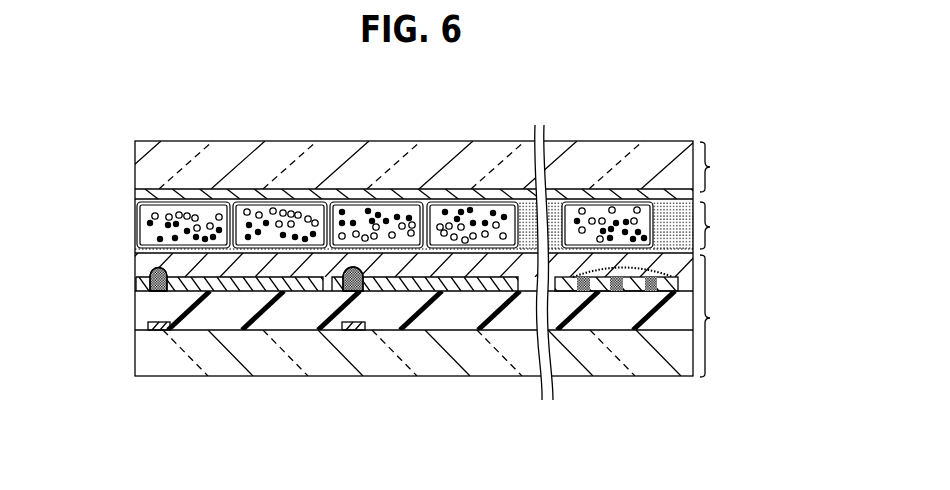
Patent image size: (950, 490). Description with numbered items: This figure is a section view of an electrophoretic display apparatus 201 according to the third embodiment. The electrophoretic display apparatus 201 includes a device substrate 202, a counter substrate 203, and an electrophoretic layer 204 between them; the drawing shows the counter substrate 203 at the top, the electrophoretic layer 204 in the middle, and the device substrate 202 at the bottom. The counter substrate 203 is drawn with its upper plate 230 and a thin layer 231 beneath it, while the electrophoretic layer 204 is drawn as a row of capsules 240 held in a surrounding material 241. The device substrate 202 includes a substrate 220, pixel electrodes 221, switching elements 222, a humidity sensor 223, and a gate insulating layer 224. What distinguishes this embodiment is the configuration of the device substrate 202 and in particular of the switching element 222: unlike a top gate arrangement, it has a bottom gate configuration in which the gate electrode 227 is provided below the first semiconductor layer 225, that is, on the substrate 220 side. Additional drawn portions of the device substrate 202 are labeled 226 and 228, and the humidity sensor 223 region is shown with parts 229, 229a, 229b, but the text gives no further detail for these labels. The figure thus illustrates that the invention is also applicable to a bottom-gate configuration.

The electrophoretic display apparatus 201 is at (727, 112).
The device substrate 202 is at (723, 316).
The counter substrate 203 is at (723, 167).
The electrophoretic layer 204 is at (723, 225).
The substrate 220 is at (137, 349).
The pixel electrode 221 is at (225, 292).
The switching element 222 is at (162, 340).
The humidity sensor 223 is at (616, 306).
The gate insulating layer 224 is at (137, 310).
The first semiconductor layer 225 is at (140, 271).
The contact portion 226 is at (337, 294).
The gate electrode 227 is at (362, 328).
The drain electrode 228 is at (650, 293).
The electrode 229 is at (569, 291).
The first electrode 229a is at (616, 284).
The second electrode 229b is at (651, 284).
The protective sheet 230 is at (138, 163).
The common electrode 231 is at (140, 193).
The microcapsule 240 is at (203, 200).
The binder 241 is at (553, 213).